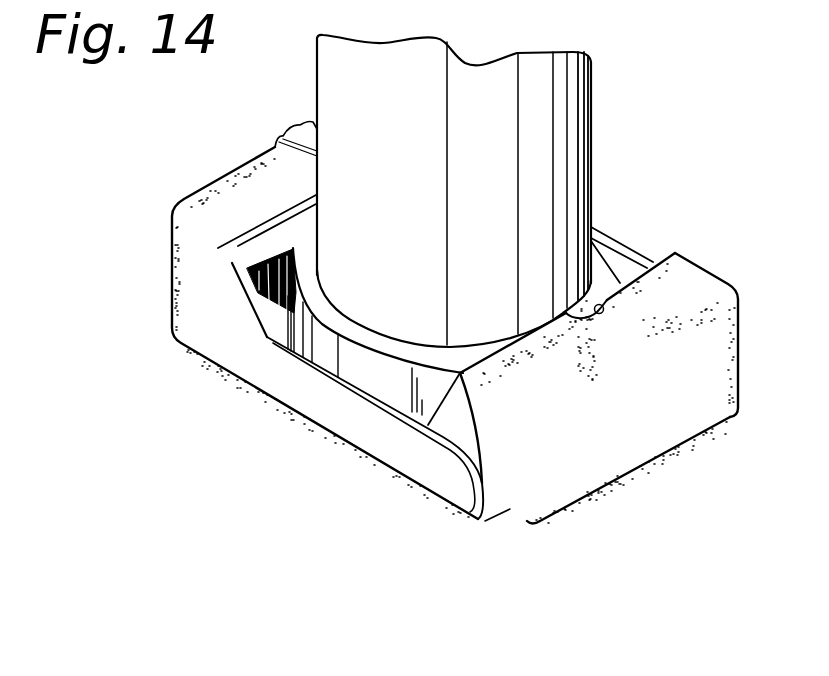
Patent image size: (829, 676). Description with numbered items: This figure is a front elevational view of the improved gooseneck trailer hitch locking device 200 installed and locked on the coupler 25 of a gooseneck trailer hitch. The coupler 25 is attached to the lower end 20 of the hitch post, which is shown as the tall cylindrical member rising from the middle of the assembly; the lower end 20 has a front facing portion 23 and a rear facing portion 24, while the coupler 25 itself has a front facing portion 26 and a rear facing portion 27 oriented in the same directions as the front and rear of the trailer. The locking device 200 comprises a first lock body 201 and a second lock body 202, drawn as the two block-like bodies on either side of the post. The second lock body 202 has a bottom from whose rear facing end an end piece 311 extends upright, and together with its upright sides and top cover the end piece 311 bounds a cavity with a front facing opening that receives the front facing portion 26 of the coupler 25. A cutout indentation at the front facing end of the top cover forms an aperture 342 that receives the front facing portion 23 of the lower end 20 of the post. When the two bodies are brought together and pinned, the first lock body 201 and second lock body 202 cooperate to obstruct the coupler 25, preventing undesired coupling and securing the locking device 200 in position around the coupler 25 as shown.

The improved gooseneck trailer hitch locking device 200 is at (121, 205).
The lower end of post 20 is at (532, 153).
The front facing portion of lower end 23 is at (553, 320).
The rear facing portion of lower end 24 is at (248, 268).
The coupler 25 is at (383, 358).
The front facing portion of coupler 26 is at (610, 260).
The rear facing portion of coupler 27 is at (292, 250).
The first lock body 201 is at (308, 415).
The second lock body 202 is at (602, 490).
The end piece 311 is at (700, 397).
The aperture 342 is at (607, 300).